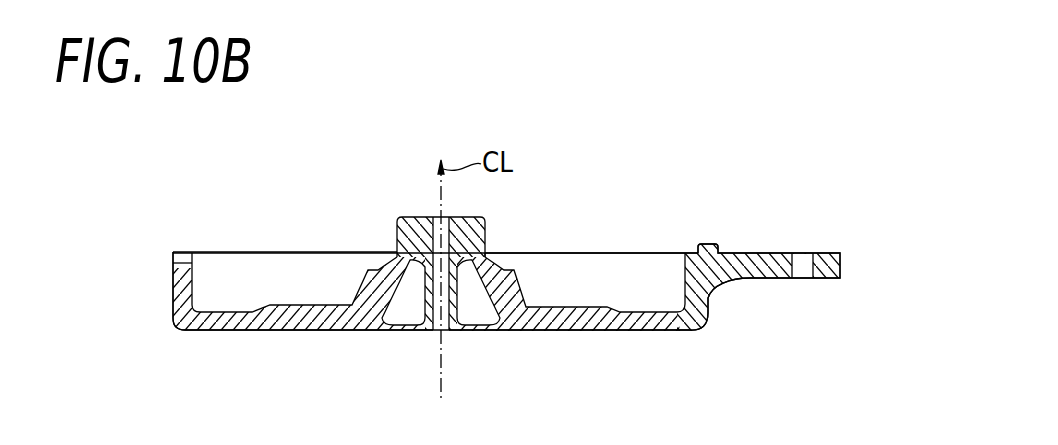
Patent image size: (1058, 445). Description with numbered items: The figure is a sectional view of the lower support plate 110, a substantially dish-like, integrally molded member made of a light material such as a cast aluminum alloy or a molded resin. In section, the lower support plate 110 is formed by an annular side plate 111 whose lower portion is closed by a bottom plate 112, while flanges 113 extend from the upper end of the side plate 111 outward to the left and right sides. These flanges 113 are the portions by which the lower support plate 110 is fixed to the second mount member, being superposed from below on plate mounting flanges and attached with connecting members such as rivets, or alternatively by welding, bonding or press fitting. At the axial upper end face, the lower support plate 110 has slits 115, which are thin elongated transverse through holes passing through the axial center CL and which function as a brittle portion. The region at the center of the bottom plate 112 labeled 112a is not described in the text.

The lower support plate 110 is at (602, 228).
The annular side plate 111 is at (173, 286).
The bottom plate 112 is at (243, 331).
The central hub / bushing portion 112a is at (420, 330).
The flange 113 is at (771, 252).
The slit 115 is at (173, 252).